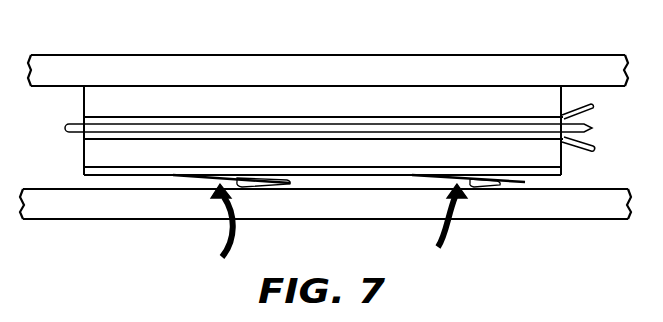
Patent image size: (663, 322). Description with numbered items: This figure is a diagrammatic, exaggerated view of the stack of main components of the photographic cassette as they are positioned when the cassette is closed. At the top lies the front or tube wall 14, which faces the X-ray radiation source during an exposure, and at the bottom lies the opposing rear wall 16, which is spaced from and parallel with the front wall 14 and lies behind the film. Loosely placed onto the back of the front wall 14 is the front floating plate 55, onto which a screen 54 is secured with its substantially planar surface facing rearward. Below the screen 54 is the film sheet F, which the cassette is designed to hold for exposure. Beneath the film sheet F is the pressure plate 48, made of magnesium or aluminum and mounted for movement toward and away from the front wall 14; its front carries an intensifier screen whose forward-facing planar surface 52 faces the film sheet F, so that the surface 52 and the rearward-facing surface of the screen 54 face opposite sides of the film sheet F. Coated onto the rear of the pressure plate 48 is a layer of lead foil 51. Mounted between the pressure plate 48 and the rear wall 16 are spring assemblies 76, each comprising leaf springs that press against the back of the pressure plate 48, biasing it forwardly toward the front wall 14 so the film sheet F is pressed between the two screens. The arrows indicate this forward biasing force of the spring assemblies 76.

The front wall 14 is at (307, 70).
The rear wall 16 is at (520, 206).
The pressure plate 48 is at (341, 158).
The layer of lead foil 51 is at (158, 172).
The planar surface 52 is at (152, 136).
The screen 54 is at (221, 115).
The front floating plate 55 is at (368, 97).
The spring assembly 76 is at (349, 216).
The film sheet F is at (594, 130).